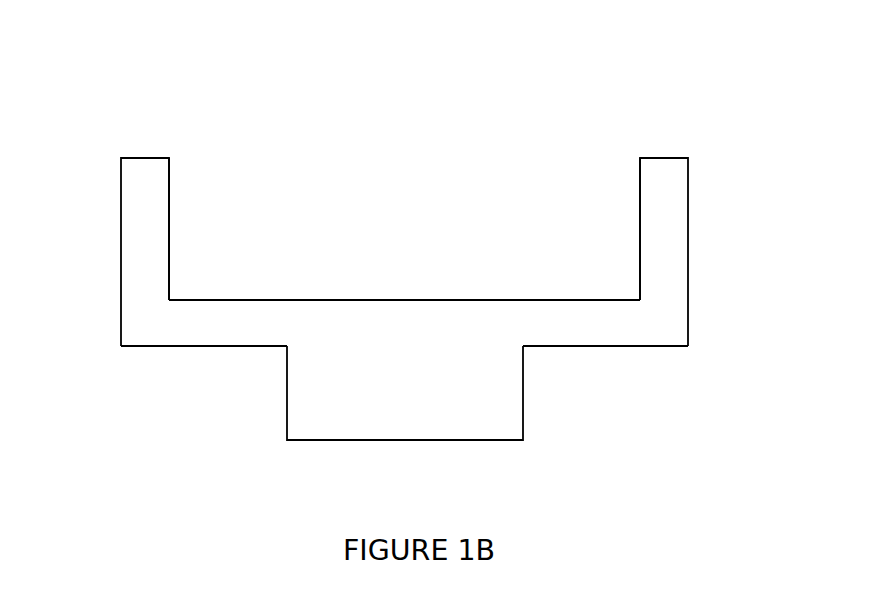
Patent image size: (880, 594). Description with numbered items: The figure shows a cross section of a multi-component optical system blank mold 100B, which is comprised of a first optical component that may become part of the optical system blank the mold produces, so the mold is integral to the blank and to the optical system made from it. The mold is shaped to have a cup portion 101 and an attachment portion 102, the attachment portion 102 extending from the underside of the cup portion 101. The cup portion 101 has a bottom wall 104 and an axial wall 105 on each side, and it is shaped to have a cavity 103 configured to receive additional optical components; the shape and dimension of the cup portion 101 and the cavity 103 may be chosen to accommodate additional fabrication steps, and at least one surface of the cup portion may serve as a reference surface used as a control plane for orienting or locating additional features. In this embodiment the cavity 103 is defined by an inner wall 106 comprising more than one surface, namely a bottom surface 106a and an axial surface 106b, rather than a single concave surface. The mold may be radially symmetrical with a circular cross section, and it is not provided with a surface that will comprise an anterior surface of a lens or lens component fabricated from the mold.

The multi-component optical system blank mold 100B is at (93, 123).
The cup portion 101 is at (696, 198).
The attachment portion 102 is at (535, 392).
The cavity 103 is at (587, 202).
The bottom wall 104 is at (233, 350).
The axial wall 105 is at (120, 243).
The inner wall 106 is at (169, 208).
The bottom surface 106a is at (380, 297).
The axial surface 106b is at (169, 258).